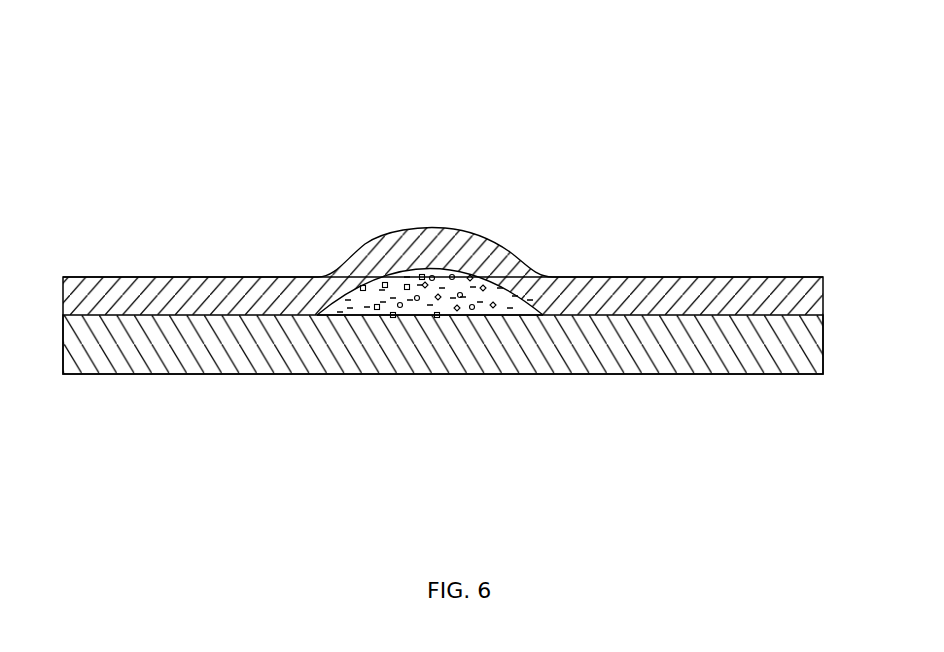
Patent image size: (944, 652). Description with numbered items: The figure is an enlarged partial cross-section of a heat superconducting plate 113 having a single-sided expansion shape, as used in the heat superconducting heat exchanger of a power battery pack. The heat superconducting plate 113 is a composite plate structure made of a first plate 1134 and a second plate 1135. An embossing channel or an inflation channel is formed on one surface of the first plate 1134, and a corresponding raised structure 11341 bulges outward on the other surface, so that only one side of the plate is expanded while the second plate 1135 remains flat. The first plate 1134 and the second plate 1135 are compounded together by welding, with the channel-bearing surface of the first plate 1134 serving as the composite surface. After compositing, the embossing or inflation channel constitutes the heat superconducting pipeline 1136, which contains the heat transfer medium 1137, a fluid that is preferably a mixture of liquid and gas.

The heat superconducting plate 113 is at (443, 218).
The first plate 1134 is at (277, 296).
The raised structure 11341 is at (419, 250).
The second plate 1135 is at (332, 355).
The heat superconducting pipeline 1136 is at (463, 273).
The heat transfer medium 1137 is at (500, 310).